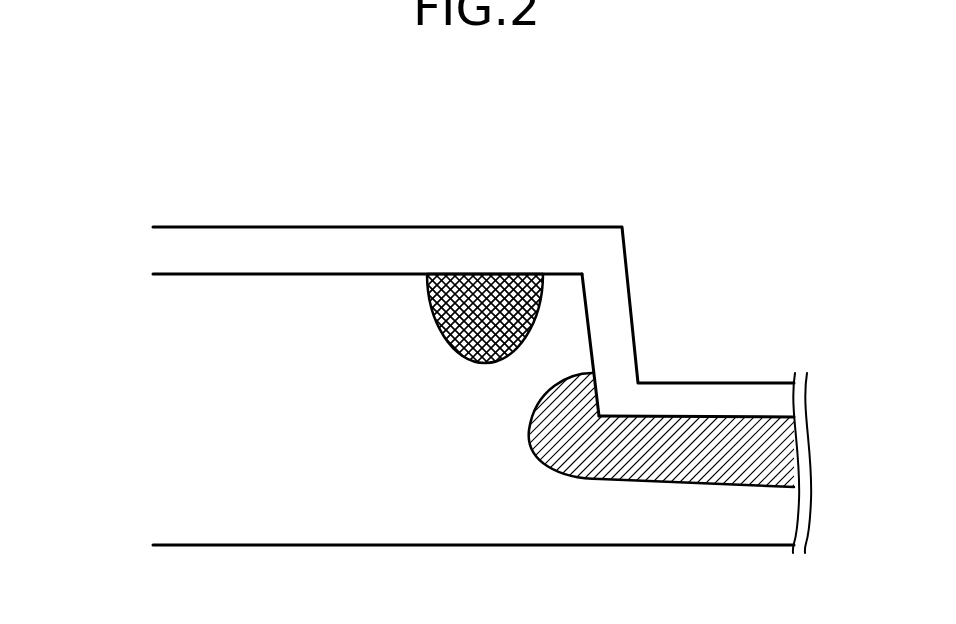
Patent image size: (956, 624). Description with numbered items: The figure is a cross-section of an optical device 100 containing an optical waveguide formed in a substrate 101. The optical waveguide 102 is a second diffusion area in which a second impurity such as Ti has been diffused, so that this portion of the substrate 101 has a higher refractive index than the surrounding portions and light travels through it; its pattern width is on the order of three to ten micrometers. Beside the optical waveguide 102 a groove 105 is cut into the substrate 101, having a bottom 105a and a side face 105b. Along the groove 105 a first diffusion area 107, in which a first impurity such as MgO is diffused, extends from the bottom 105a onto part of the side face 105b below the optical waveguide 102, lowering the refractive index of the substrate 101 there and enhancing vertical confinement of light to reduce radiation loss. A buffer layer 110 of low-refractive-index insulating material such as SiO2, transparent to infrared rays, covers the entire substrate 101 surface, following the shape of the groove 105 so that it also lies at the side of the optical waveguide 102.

The optical device 100 is at (638, 146).
The substrate 101 is at (168, 462).
The optical waveguide 102 is at (465, 352).
The groove 105 is at (752, 267).
The bottom 105a is at (713, 417).
The side face 105b is at (588, 317).
The first diffusion area 107 is at (550, 452).
The buffer layer 110 is at (185, 245).